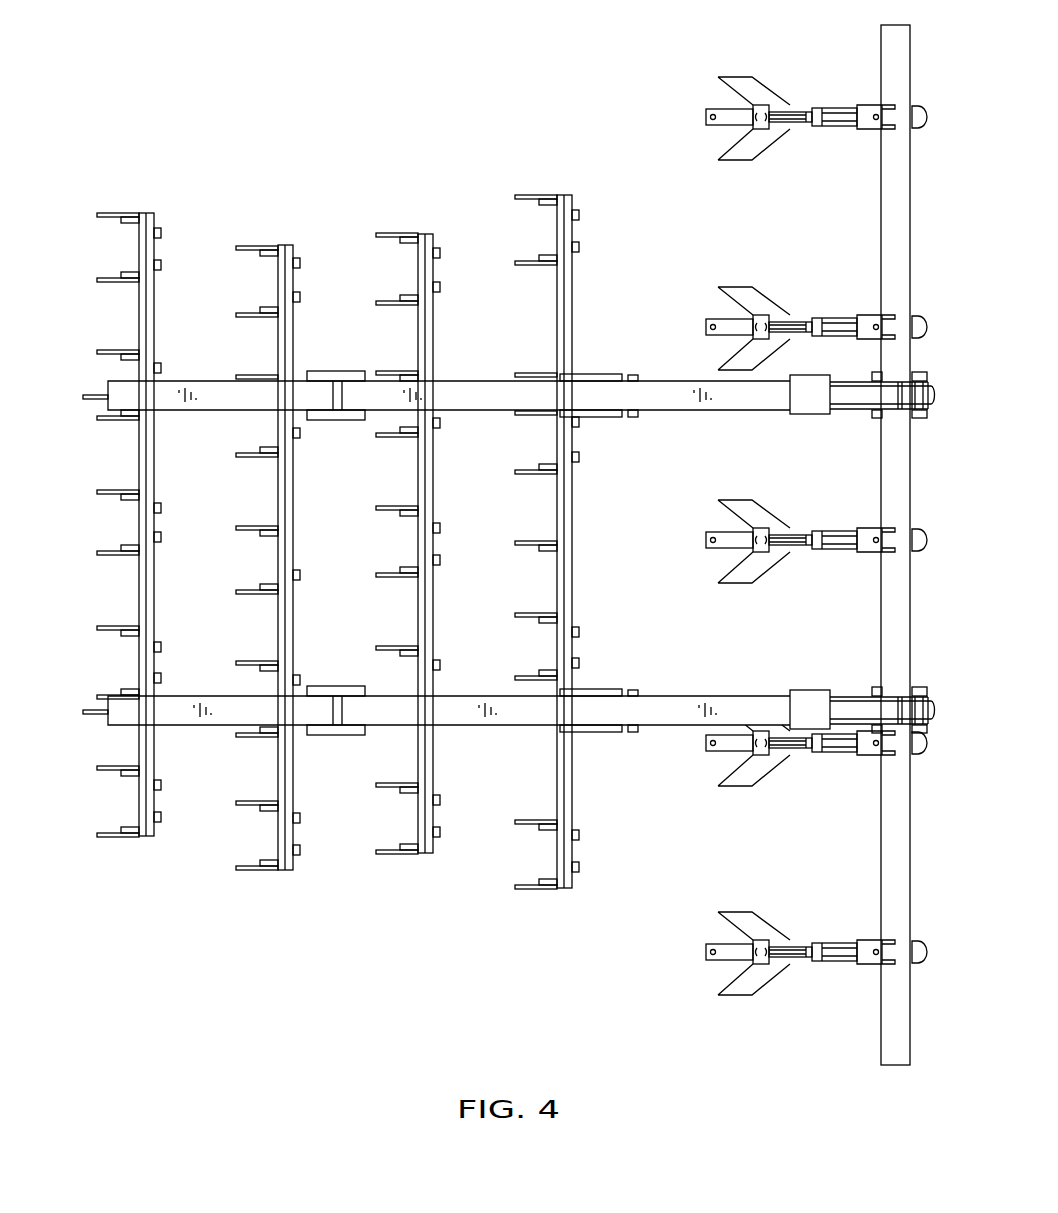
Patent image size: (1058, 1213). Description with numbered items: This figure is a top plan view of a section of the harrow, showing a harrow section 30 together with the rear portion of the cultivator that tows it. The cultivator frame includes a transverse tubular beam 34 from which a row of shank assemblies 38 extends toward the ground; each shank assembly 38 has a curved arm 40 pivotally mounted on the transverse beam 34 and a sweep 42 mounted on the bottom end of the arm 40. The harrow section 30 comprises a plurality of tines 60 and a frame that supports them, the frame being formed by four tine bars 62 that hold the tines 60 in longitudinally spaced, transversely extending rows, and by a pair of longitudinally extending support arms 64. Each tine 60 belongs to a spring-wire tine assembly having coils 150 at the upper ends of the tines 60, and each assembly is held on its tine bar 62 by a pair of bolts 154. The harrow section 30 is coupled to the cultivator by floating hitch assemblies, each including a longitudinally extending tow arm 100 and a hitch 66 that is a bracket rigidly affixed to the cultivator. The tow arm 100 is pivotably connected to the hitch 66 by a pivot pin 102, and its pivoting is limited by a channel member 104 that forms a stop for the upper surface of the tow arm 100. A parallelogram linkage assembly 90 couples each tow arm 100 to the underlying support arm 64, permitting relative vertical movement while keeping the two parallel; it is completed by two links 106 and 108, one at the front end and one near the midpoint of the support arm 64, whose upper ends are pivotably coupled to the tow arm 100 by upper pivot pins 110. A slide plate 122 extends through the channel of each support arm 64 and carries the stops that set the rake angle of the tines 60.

The harrow section 30 is at (467, 112).
The transverse tubular beam 34 is at (881, 160).
The shank assembly 38 is at (771, 152).
The curved arm 40 is at (706, 116).
The sweep 42 is at (728, 150).
The tine 60 is at (410, 297).
The tine bar 62 is at (156, 596).
The support arm 64 is at (232, 390).
The hitch 66 is at (858, 412).
The parallelogram linkage assembly 90 is at (490, 414).
The tow arm 100 is at (470, 395).
The pivot pin 102 is at (877, 372).
The channel member 104 is at (810, 405).
The link 106 is at (600, 374).
The link 108 is at (345, 372).
The upper pivot pin 110 is at (338, 421).
The slide plate 122 is at (85, 397).
The coil 150 is at (268, 313).
The bolt 154 is at (441, 560).